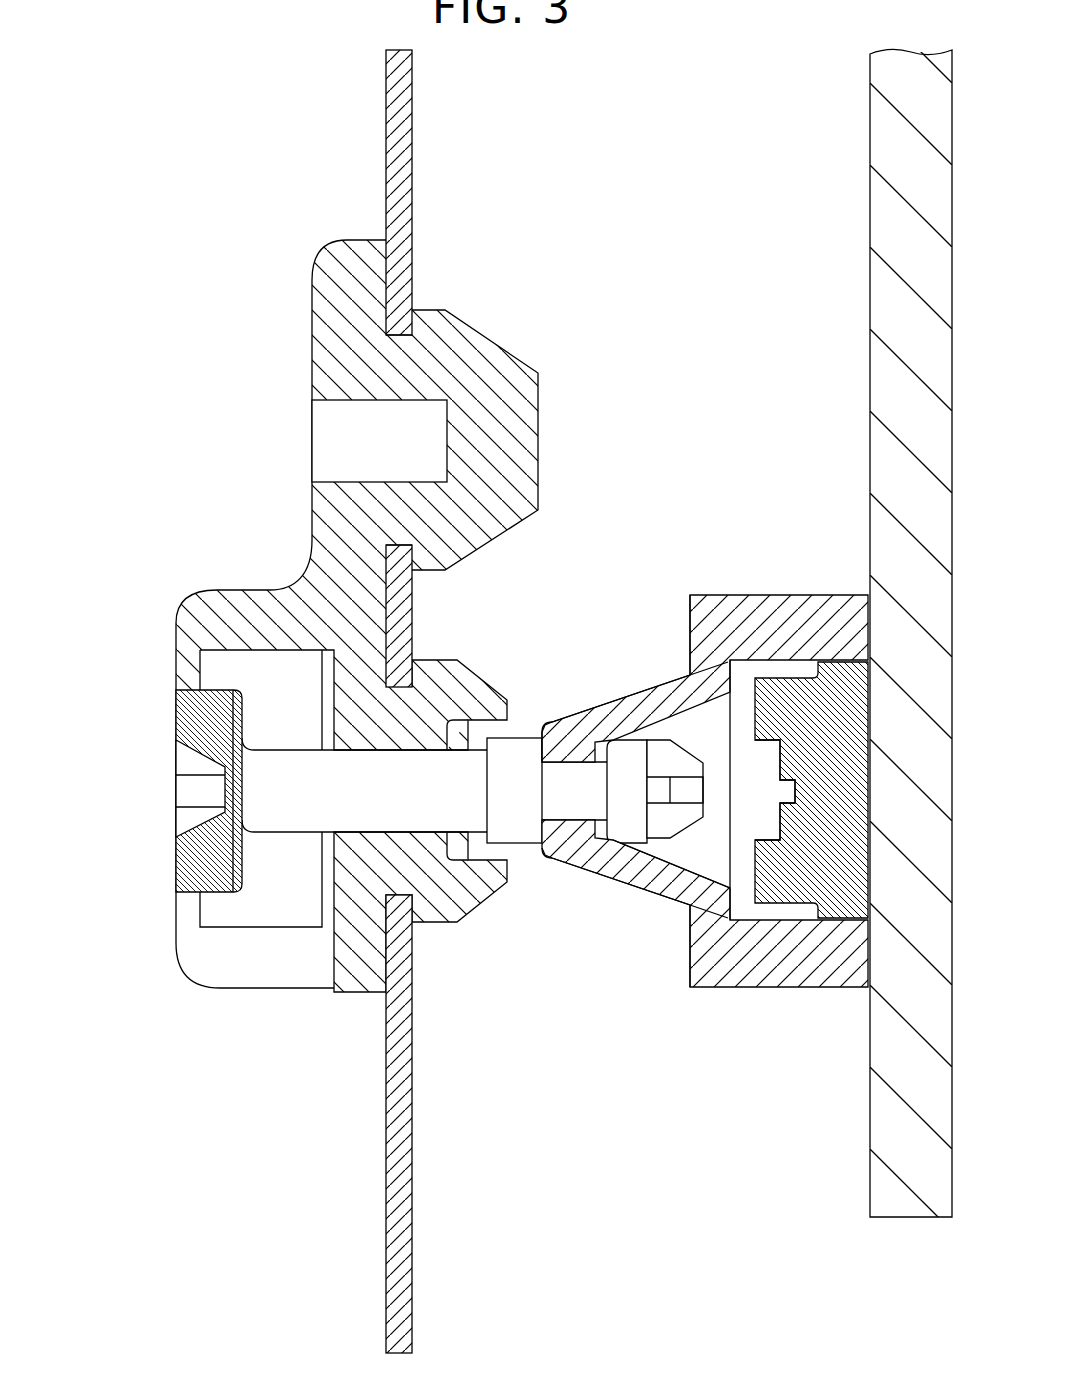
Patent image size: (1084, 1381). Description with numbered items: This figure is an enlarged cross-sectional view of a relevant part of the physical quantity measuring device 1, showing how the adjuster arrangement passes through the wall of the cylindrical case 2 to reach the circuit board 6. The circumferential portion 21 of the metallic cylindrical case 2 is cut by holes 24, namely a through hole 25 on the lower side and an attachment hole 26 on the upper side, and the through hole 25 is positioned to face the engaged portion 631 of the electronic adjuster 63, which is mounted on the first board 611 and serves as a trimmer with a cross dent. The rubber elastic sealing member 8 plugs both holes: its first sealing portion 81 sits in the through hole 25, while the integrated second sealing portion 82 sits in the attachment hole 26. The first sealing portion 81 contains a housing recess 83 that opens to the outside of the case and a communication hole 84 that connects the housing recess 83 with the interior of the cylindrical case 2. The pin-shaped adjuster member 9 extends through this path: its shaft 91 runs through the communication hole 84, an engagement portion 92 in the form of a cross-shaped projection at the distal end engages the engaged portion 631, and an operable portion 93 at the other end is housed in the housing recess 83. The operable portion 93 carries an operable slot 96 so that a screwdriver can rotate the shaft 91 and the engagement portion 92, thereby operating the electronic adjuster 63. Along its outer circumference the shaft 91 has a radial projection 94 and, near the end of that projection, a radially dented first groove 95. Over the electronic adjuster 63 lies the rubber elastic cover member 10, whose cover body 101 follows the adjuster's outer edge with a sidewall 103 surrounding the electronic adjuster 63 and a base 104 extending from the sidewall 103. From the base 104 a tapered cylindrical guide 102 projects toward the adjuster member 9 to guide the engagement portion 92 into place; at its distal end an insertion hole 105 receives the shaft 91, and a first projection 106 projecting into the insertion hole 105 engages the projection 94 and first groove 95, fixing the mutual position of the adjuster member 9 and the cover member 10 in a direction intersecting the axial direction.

The physical quantity measuring device 1 is at (157, 128).
The cylindrical case 2 is at (282, 701).
The circumferential portion 21 is at (386, 1258).
The holes 24 is at (282, 453).
The through hole 25 is at (288, 572).
The attachment hole 26 is at (390, 528).
The circuit board 6 is at (818, 633).
The first board 611 is at (870, 218).
The electronic adjuster 63 is at (779, 725).
The engaged portion 631 is at (757, 783).
The sealing member 8 is at (310, 667).
The first sealing portion 81 is at (183, 603).
The second sealing portion 82 is at (312, 313).
The housing recess 83 is at (232, 660).
The communication hole 84 is at (345, 832).
The adjuster member 9 is at (377, 810).
The shaft 91 is at (420, 842).
The engagement portion 92 is at (680, 745).
The operable portion 93 is at (157, 791).
The projection 94 is at (523, 737).
The first groove 95 is at (570, 723).
The operable slot 96 is at (197, 803).
The cover member 10 is at (680, 894).
The cover body 101 is at (755, 990).
The guide 102 is at (610, 880).
The sidewall 103 is at (818, 990).
The base 104 is at (690, 955).
The insertion hole 105 is at (581, 820).
The first projection 106 is at (538, 840).